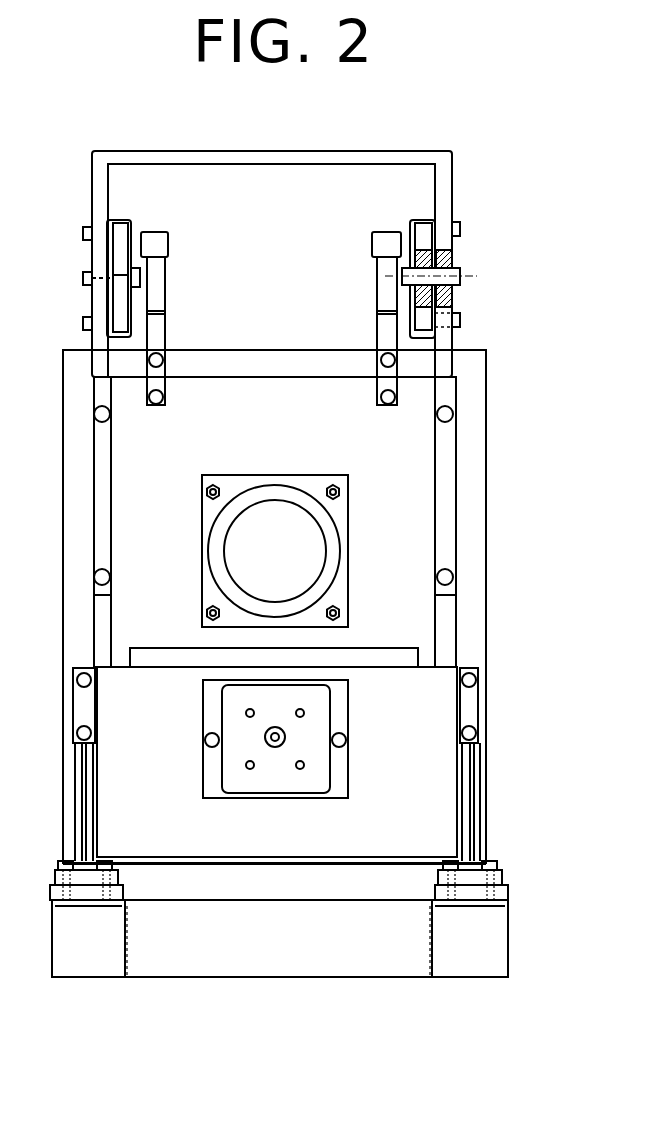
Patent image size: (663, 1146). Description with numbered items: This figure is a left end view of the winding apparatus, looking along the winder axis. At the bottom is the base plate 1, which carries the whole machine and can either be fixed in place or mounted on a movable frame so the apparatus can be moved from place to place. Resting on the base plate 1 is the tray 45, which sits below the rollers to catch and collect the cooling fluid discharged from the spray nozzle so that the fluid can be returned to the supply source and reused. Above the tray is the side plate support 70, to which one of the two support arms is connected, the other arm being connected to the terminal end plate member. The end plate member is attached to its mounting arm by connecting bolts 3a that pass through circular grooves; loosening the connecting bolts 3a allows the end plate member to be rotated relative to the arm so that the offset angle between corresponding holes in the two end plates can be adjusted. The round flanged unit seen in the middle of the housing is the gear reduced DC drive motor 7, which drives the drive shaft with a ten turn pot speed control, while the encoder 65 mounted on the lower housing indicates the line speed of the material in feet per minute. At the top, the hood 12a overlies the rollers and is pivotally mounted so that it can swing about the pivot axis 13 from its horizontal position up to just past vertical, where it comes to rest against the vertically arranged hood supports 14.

The base plate 1 is at (225, 963).
The connecting bolts 3a is at (427, 618).
The gear reduced DC drive motor 7 is at (320, 566).
The hood 12a is at (322, 152).
The pivot axis 13 is at (433, 274).
The hood supports 14 is at (389, 232).
The tray 45 is at (326, 892).
The encoder 65 is at (330, 777).
The side plate support 70 is at (443, 811).